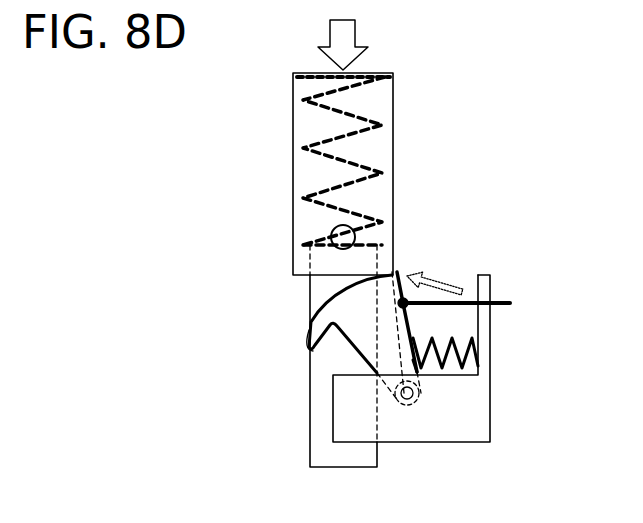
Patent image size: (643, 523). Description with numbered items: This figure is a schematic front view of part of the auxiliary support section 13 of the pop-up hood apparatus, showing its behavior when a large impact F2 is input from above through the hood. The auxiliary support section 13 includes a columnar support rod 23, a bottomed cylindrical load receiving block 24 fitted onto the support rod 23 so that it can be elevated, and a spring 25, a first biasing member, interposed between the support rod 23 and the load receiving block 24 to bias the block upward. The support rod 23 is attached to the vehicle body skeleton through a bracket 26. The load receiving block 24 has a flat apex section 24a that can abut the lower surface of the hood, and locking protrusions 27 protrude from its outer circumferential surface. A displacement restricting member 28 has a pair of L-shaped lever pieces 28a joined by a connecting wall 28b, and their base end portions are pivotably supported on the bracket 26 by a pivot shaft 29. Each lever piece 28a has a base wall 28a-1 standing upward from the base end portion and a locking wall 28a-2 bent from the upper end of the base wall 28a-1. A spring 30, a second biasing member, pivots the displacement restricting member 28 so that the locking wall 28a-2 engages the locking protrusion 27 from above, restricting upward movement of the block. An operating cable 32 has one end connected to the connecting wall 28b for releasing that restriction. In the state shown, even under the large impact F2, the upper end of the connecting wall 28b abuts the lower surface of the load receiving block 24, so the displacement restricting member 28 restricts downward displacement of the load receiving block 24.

The large impact F2 is at (330, 32).
The auxiliary support section 13 is at (432, 97).
The support rod 23 is at (389, 378).
The load receiving block 24 is at (293, 177).
The flat apex section 24a is at (358, 73).
The spring 25 is at (322, 96).
The bracket 26 is at (482, 428).
The locking protrusion 27 is at (331, 233).
The displacement restricting member 28 is at (398, 303).
The lever piece 28a is at (398, 303).
The base wall 28a-1 is at (414, 374).
The locking wall 28a-2 is at (308, 333).
The connecting wall 28b is at (397, 273).
The pivot shaft 29 is at (407, 401).
The spring 30 is at (467, 340).
The operating cable 32 is at (503, 303).